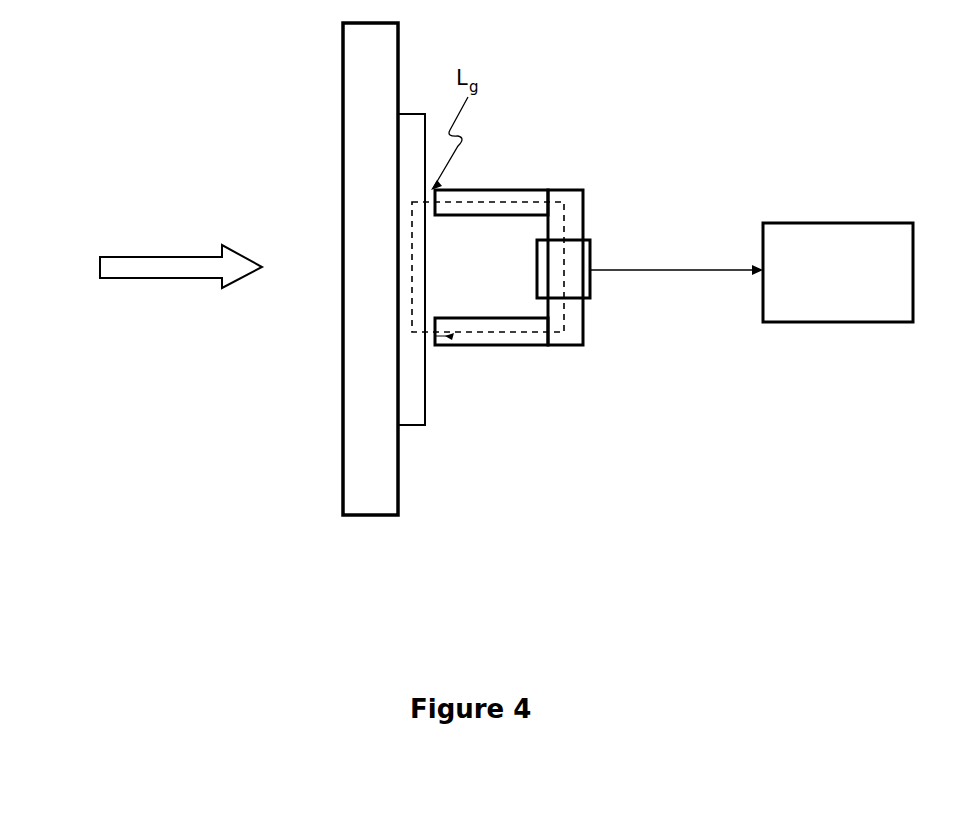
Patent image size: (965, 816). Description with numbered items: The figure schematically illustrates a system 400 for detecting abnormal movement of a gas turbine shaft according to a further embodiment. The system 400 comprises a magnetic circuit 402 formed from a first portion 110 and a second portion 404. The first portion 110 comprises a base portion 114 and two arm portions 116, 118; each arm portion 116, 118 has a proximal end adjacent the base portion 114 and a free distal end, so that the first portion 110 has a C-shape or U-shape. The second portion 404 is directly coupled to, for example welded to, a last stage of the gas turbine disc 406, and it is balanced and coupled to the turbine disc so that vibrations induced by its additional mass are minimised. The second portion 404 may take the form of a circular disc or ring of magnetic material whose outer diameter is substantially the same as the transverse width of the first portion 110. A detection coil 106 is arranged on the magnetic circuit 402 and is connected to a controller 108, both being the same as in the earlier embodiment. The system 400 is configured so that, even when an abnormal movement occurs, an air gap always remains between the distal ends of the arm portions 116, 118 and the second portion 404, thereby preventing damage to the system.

The system 400 is at (653, 126).
The magnetic circuit 402 is at (449, 342).
The second portion 404 is at (408, 415).
The last stage of the gas turbine disc 406 is at (370, 165).
The detection coil 106 is at (588, 260).
The controller 108 is at (818, 323).
The first portion 110 is at (482, 188).
The base portion 114 is at (583, 340).
The arm portion 116 is at (502, 200).
The arm portion 118 is at (473, 337).